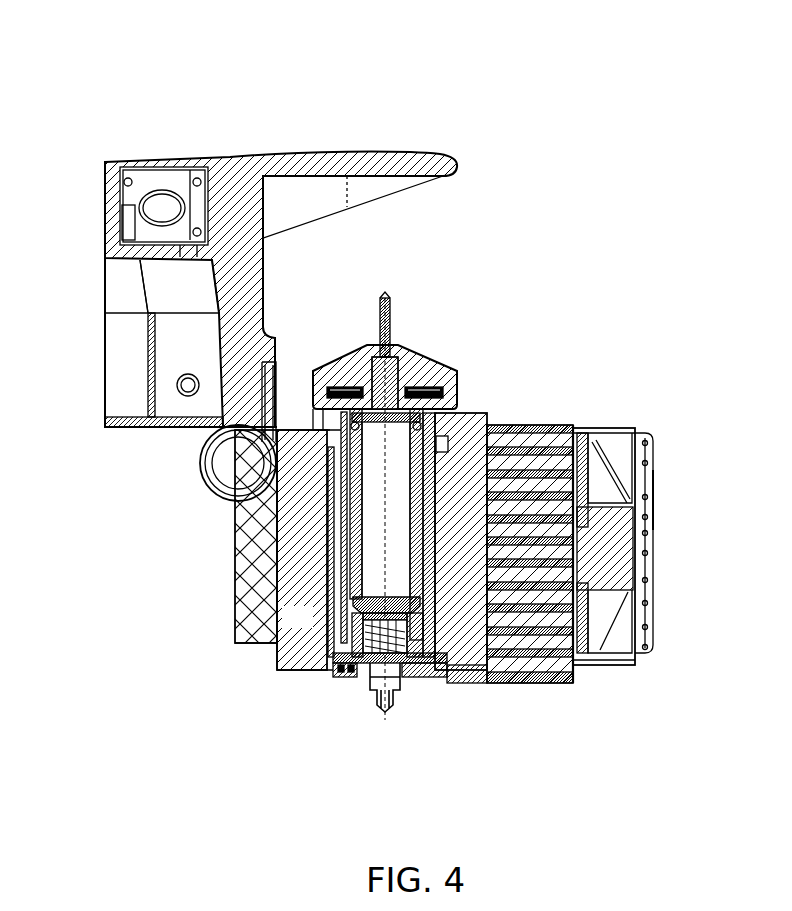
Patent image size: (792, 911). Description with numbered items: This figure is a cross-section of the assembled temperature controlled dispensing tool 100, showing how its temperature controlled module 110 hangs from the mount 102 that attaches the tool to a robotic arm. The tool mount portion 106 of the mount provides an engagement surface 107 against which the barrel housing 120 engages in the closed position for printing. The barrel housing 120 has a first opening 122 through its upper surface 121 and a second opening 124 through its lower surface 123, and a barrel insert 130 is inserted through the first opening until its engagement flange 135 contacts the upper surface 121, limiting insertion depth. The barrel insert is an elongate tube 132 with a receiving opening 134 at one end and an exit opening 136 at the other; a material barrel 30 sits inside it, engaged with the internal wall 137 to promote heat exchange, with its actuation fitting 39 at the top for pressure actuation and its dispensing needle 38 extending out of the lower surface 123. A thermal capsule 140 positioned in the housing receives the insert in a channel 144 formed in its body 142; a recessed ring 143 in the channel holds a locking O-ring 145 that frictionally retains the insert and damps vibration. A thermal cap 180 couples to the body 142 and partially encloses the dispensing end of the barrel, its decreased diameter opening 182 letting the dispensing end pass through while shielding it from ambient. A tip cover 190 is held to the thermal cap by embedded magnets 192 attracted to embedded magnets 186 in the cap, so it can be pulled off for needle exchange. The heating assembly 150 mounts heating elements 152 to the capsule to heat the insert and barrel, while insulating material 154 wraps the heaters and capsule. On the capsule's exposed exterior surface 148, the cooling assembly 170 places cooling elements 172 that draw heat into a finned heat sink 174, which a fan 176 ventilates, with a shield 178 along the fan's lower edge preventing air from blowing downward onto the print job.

The dispensing tool 100 is at (696, 123).
The mount 102 is at (517, 201).
The tool mount portion 106 is at (216, 550).
The engagement surface 107 is at (240, 628).
The temperature controlled module 110 is at (488, 483).
The barrel housing 120 is at (250, 702).
The upper surface 121 is at (228, 428).
The first opening 122 is at (330, 430).
The lower surface 123 is at (292, 668).
The second opening 124 is at (327, 666).
The barrel insert 130 is at (455, 511).
The elongate tube 132 is at (488, 424).
The receiving opening 134 is at (341, 384).
The engagement flange 135 is at (315, 379).
The exit opening 136 is at (343, 603).
The internal wall 137 is at (390, 494).
The thermal capsule 140 is at (630, 429).
The body 142 is at (650, 463).
The recessed ring 143 is at (272, 456).
The channel 144 is at (440, 412).
The locking O-ring 145 is at (298, 497).
The exterior surface 148 is at (652, 503).
The heating assembly 150 is at (292, 664).
The heating elements 152 is at (270, 562).
The insulating material 154 is at (320, 551).
The cooling assembly 170 is at (648, 489).
The cooling elements 172 is at (462, 655).
The heat sink 174 is at (532, 588).
The fan 176 is at (603, 427).
The shield 178 is at (544, 686).
The thermal cap 180 is at (652, 535).
The decreased diameter opening 182 is at (439, 637).
The embedded magnets 186 is at (354, 667).
The tip cover 190 is at (420, 673).
The embedded magnets 192 is at (347, 668).
The material barrel 30 is at (419, 332).
The dispensing needle 38 is at (447, 659).
The actuation fitting 39 is at (392, 340).